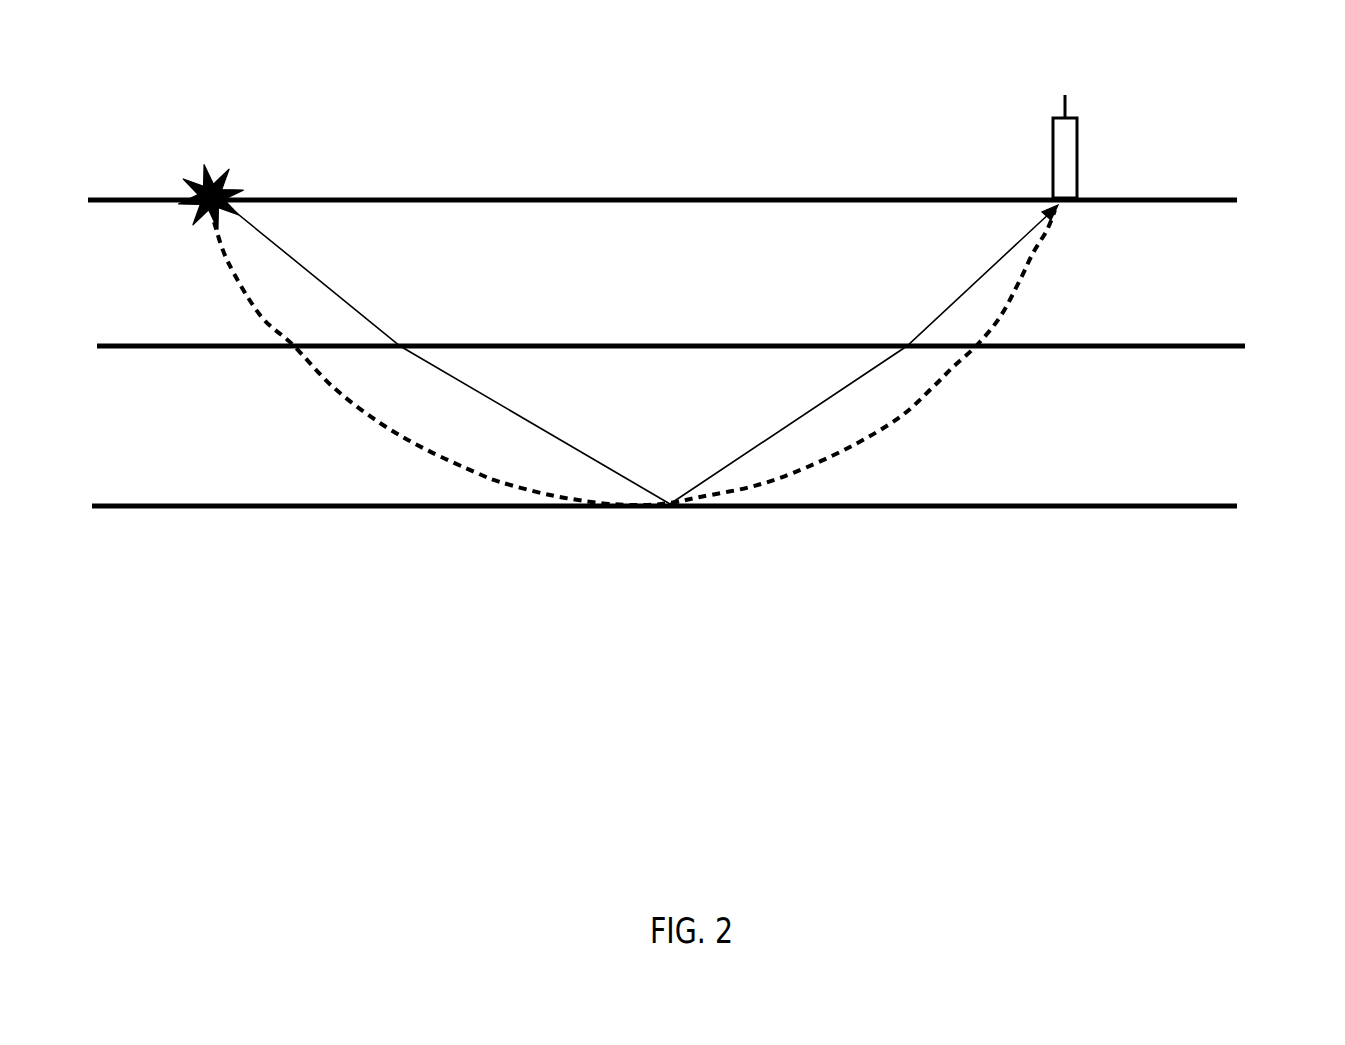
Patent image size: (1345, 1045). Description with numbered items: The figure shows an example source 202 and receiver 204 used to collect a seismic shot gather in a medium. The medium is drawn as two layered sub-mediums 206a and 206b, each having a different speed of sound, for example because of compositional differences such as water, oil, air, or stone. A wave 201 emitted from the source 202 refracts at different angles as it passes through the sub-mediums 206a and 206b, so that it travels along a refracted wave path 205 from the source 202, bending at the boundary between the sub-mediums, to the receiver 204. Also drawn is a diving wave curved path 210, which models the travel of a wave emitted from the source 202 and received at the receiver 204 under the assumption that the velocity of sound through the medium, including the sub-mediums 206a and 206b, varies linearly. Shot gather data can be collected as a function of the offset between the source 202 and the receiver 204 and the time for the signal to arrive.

The wave 201 is at (363, 315).
The source 202 is at (231, 172).
The receiver 204 is at (1078, 138).
The refracted wave path 205 is at (967, 295).
The sub-medium 206a is at (666, 273).
The sub-medium 206b is at (664, 471).
The diving wave curved path 210 is at (935, 390).